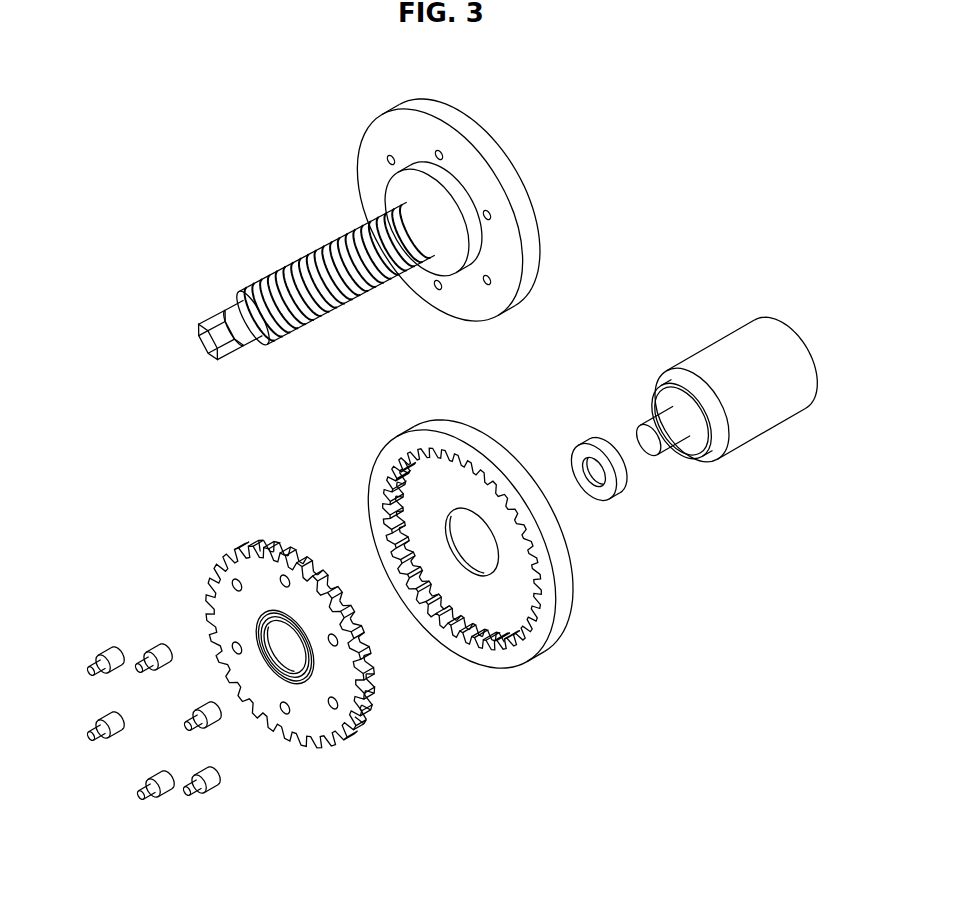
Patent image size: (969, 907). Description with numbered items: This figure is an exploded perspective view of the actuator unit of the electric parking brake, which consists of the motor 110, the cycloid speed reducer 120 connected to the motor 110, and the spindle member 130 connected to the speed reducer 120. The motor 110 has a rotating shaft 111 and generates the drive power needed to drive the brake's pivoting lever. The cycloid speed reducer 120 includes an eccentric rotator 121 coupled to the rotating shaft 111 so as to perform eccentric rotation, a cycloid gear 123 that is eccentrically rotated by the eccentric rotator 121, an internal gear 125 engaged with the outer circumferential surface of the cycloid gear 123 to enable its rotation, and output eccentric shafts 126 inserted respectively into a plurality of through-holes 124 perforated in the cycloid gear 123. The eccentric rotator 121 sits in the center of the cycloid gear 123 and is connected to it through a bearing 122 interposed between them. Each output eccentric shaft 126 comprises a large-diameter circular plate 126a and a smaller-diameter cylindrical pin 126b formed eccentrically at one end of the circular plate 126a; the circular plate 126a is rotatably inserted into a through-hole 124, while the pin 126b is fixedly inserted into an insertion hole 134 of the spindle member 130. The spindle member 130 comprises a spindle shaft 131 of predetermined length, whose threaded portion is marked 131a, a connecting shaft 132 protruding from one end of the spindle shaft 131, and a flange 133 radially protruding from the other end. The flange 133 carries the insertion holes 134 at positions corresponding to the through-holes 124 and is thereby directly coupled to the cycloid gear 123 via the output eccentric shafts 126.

The motor 110 is at (754, 430).
The rotating shaft 111 is at (668, 447).
The cycloid speed reducer 120 is at (430, 764).
The eccentric rotator 121 is at (616, 486).
The bearing 122 is at (300, 610).
The cycloid gear 123 is at (322, 748).
The through-holes 124 is at (336, 643).
The internal gear 125 is at (566, 606).
The output eccentric shafts 126 is at (244, 855).
The circular plate 126a is at (212, 785).
The cylindrical pin 126b is at (191, 789).
The spindle member 130 is at (298, 207).
The spindle shaft 131 is at (317, 349).
The worm thread 131a is at (342, 320).
The connecting shaft 132 is at (229, 357).
The flange 133 is at (469, 135).
The insertion holes 134 is at (441, 152).